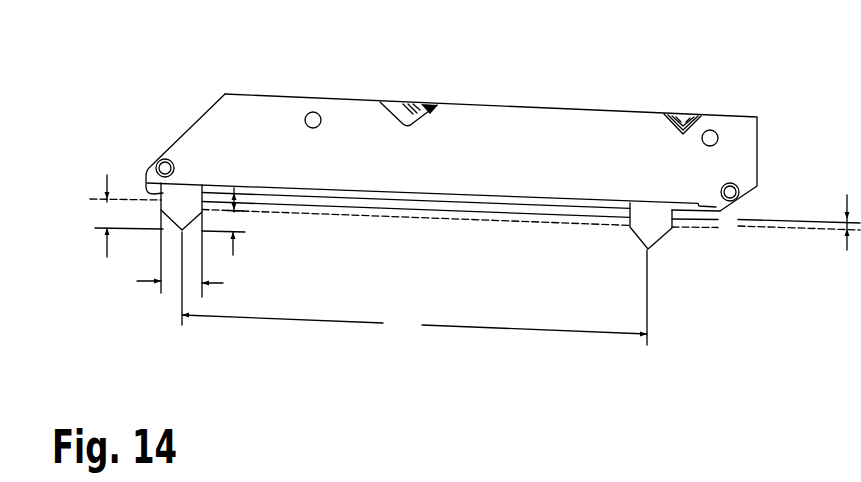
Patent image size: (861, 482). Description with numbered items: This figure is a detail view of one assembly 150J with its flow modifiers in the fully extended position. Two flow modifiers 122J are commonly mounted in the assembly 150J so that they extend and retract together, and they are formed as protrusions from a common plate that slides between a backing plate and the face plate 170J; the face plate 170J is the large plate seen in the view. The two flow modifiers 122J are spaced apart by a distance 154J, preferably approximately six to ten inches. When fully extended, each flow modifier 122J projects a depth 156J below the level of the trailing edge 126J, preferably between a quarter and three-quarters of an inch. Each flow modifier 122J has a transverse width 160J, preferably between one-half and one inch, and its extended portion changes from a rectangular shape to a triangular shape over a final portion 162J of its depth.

The assembly 150J is at (253, 44).
The face plate 170J is at (508, 133).
The flow modifier 122J is at (192, 198).
The trailing edge 126J is at (747, 227).
The distance 154J is at (414, 288).
The depth 156J is at (107, 250).
The width 160J is at (137, 281).
The final portion 162J is at (234, 245).